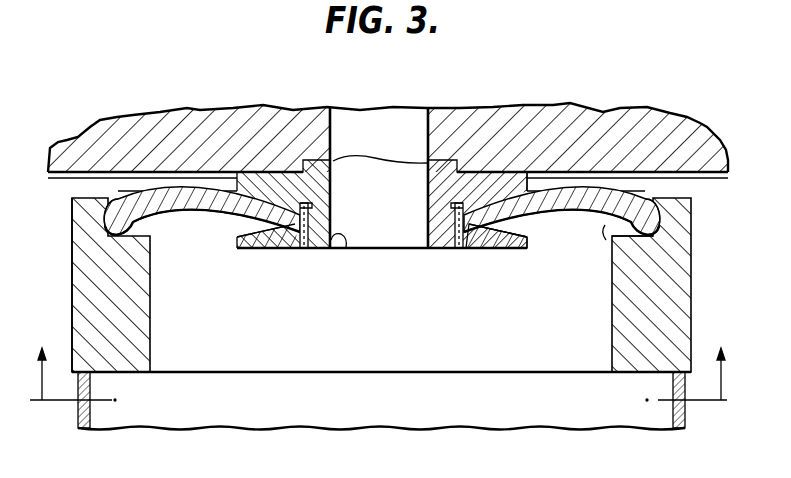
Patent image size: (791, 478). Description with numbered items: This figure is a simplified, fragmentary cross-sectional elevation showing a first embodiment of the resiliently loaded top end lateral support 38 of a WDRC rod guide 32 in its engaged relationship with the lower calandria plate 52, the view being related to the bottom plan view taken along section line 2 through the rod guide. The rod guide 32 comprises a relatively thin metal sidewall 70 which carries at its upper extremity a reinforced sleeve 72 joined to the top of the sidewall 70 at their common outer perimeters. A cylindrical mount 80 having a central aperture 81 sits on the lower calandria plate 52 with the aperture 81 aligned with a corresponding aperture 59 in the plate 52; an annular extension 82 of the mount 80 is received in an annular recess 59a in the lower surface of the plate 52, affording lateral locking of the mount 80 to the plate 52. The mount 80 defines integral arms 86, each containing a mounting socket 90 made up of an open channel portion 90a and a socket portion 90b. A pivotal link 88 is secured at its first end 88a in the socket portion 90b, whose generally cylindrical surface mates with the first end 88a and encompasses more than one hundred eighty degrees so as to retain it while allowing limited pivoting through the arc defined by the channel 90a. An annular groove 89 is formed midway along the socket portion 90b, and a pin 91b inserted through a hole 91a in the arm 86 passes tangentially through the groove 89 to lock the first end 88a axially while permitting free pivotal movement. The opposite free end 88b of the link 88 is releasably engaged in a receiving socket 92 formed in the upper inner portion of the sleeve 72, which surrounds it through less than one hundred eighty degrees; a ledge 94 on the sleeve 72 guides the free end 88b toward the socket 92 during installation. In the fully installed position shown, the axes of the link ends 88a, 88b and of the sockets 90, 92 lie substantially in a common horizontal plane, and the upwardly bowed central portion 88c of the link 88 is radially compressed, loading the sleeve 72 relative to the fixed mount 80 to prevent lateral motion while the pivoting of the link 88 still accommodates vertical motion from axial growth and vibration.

The section line 2— 2 is at (382, 374).
The WDRC rod guide 32 is at (72, 294).
The top end lateral support 38 is at (72, 263).
The lower calandria plate 52 is at (256, 145).
The aperture 59 is at (335, 118).
The annular recess 59a is at (403, 158).
The thin metal sidewall 70 is at (690, 422).
The sleeve 72 is at (693, 318).
The cylindrical mount 80 is at (317, 252).
The central aperture 81 is at (346, 249).
The annular extension 82 is at (306, 162).
The integral arm 86 is at (251, 250).
The pivotal link 88 is at (178, 221).
The first end of link 88a is at (269, 252).
The second free end of link 88b is at (117, 203).
The central portion of link 88c is at (170, 194).
The annular groove 89 is at (455, 240).
The mounting socket 90 is at (234, 233).
The open channel portion 90a is at (515, 252).
The socket portion 90b is at (463, 172).
The hole 91a is at (458, 213).
The pin 91b is at (304, 250).
The receiving socket 92 is at (655, 232).
The ledge 94 is at (606, 240).